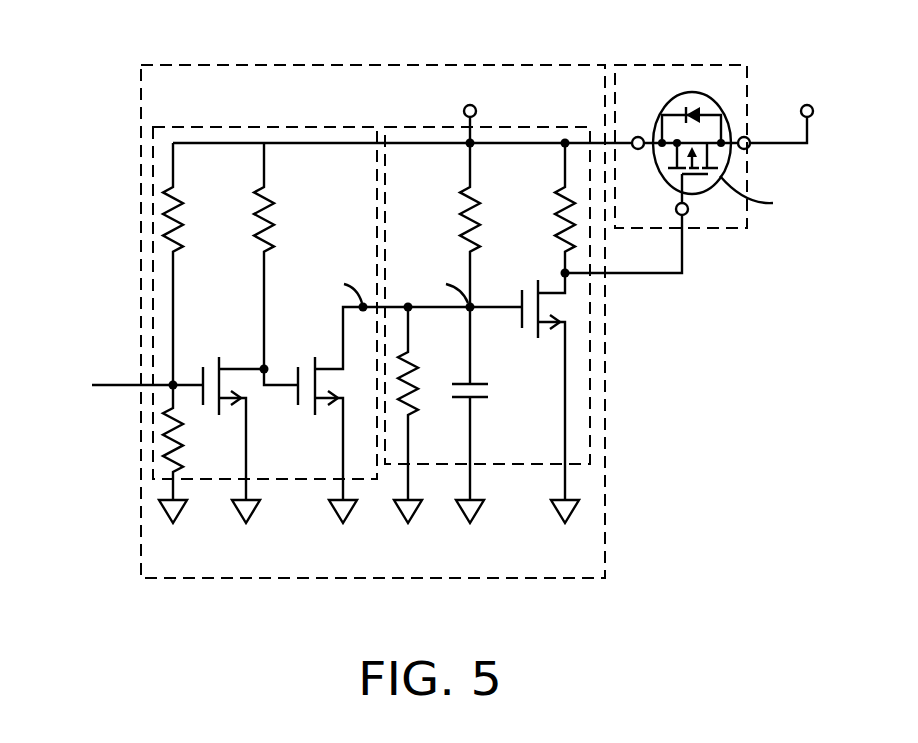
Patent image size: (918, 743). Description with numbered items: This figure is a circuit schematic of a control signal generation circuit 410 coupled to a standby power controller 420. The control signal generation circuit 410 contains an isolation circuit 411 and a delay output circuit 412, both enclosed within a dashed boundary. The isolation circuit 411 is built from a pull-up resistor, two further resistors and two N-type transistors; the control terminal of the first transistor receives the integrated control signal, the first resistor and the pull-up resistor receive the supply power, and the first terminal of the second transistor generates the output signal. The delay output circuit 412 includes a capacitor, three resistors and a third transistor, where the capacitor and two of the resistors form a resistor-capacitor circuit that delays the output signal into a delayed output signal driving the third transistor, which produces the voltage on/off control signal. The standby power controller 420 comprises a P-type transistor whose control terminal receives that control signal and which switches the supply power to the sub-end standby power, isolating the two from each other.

The control signal generation circuit 410 is at (503, 65).
The isolation circuit 411 is at (288, 127).
The delay output circuit 412 is at (522, 127).
The standby power controller 420 is at (697, 65).